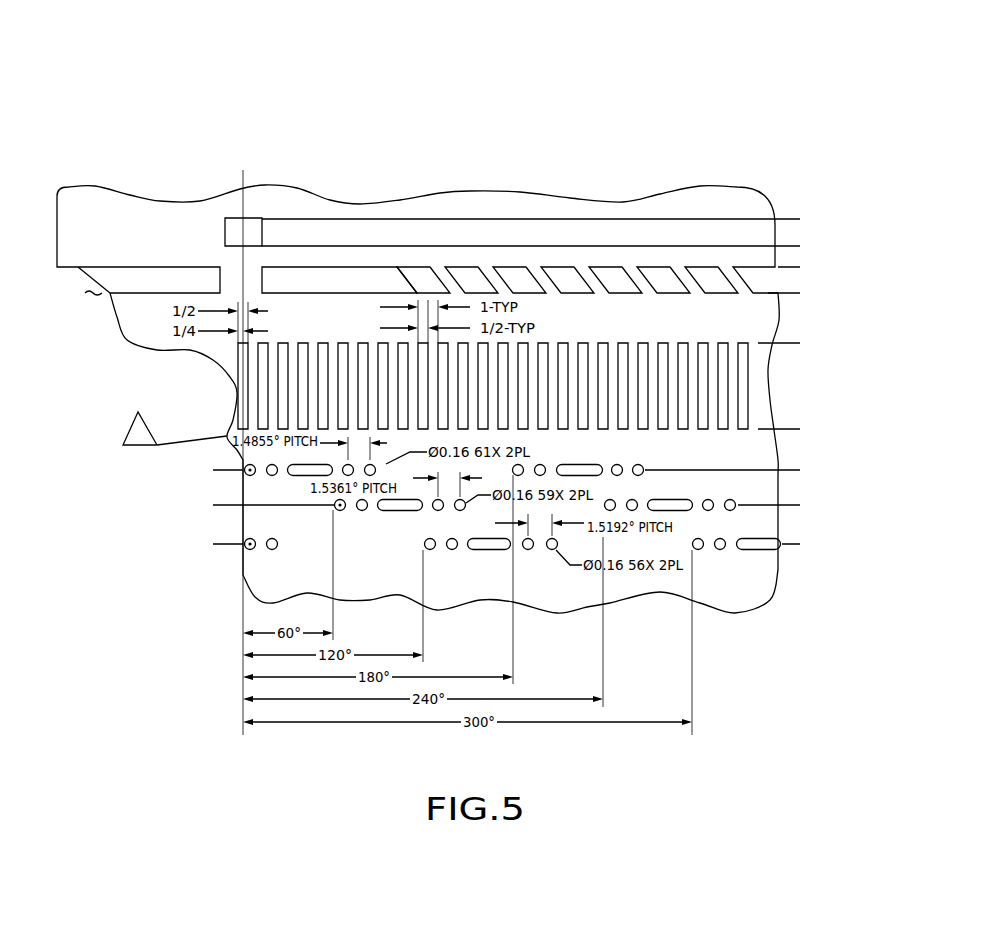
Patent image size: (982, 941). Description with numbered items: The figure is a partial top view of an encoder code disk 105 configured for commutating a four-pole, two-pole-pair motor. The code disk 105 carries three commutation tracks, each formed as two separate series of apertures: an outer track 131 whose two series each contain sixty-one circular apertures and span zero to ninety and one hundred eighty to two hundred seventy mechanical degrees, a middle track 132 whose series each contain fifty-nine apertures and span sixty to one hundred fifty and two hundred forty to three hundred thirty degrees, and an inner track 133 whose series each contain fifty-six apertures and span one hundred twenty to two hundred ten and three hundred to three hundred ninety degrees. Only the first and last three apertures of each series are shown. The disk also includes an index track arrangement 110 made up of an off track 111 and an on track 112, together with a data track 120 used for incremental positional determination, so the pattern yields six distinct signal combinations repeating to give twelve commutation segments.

The encoder code disk 105 is at (206, 112).
The index track arrangement 110 is at (412, 262).
The off track 111 is at (318, 283).
The on track 112 is at (252, 232).
The data track 120 is at (208, 372).
The outer track 131 is at (137, 471).
The middle track 132 is at (137, 505).
The inner track 133 is at (137, 544).